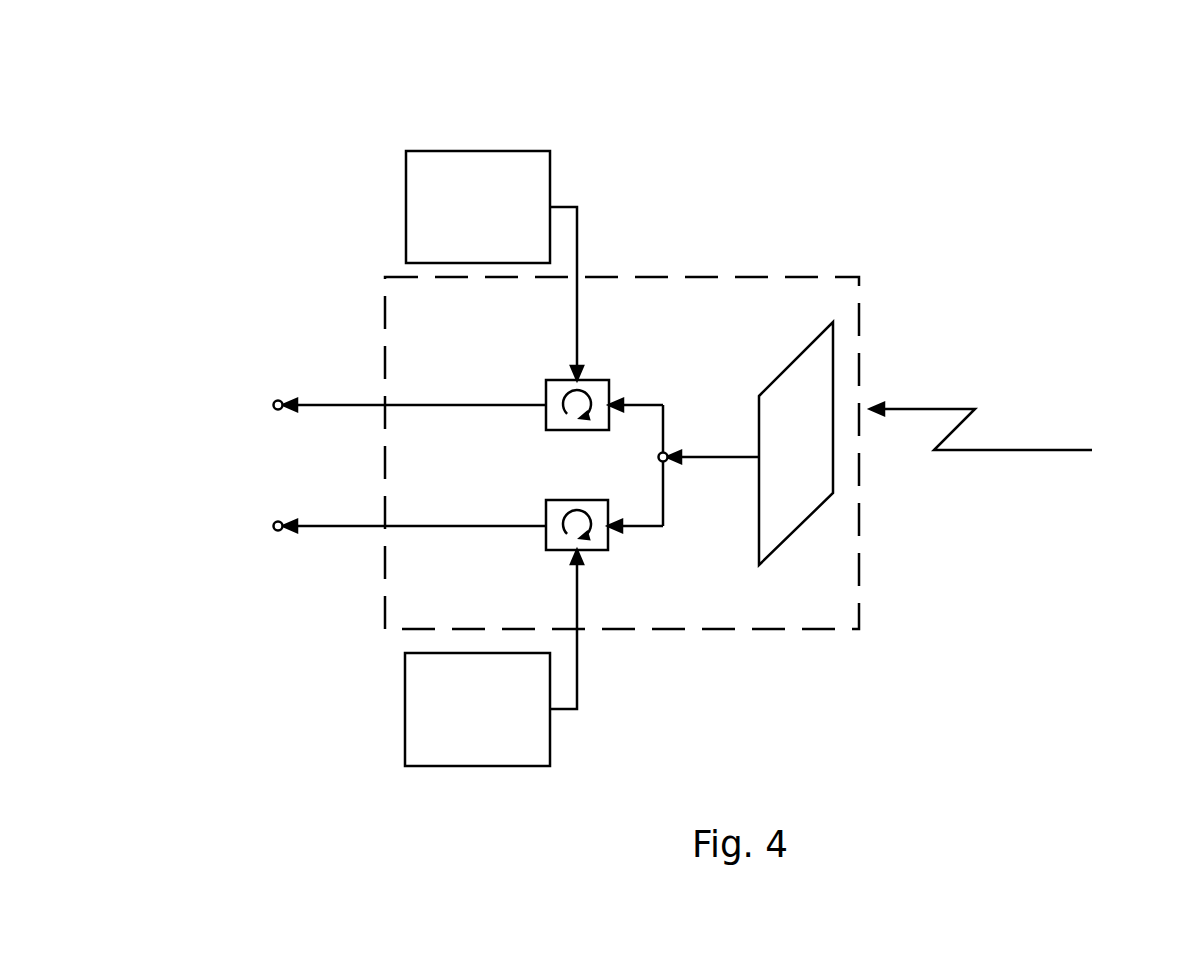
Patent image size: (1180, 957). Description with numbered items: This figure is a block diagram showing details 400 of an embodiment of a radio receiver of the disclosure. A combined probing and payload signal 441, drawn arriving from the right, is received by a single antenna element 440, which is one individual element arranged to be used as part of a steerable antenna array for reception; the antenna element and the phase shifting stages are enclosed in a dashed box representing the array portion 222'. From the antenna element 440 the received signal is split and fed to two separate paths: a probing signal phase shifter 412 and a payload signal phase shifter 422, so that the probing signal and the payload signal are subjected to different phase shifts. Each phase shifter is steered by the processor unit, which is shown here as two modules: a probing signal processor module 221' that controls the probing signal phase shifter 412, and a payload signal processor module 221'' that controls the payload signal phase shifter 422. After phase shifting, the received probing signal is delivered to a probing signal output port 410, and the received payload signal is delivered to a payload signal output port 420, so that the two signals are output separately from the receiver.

The details of a radio receiver embodiment 400 is at (875, 190).
The steerable antenna array portion 222' is at (622, 416).
The probing signal processor module 221' is at (482, 224).
The payload signal processor module 221'' is at (509, 686).
The probing signal phase shifter 412 is at (553, 380).
The payload signal phase shifter 422 is at (550, 500).
The antenna element 440 is at (783, 361).
The probing and payload signal 441 is at (999, 384).
The probing signal output port 410 is at (278, 376).
The payload signal output port 420 is at (281, 560).